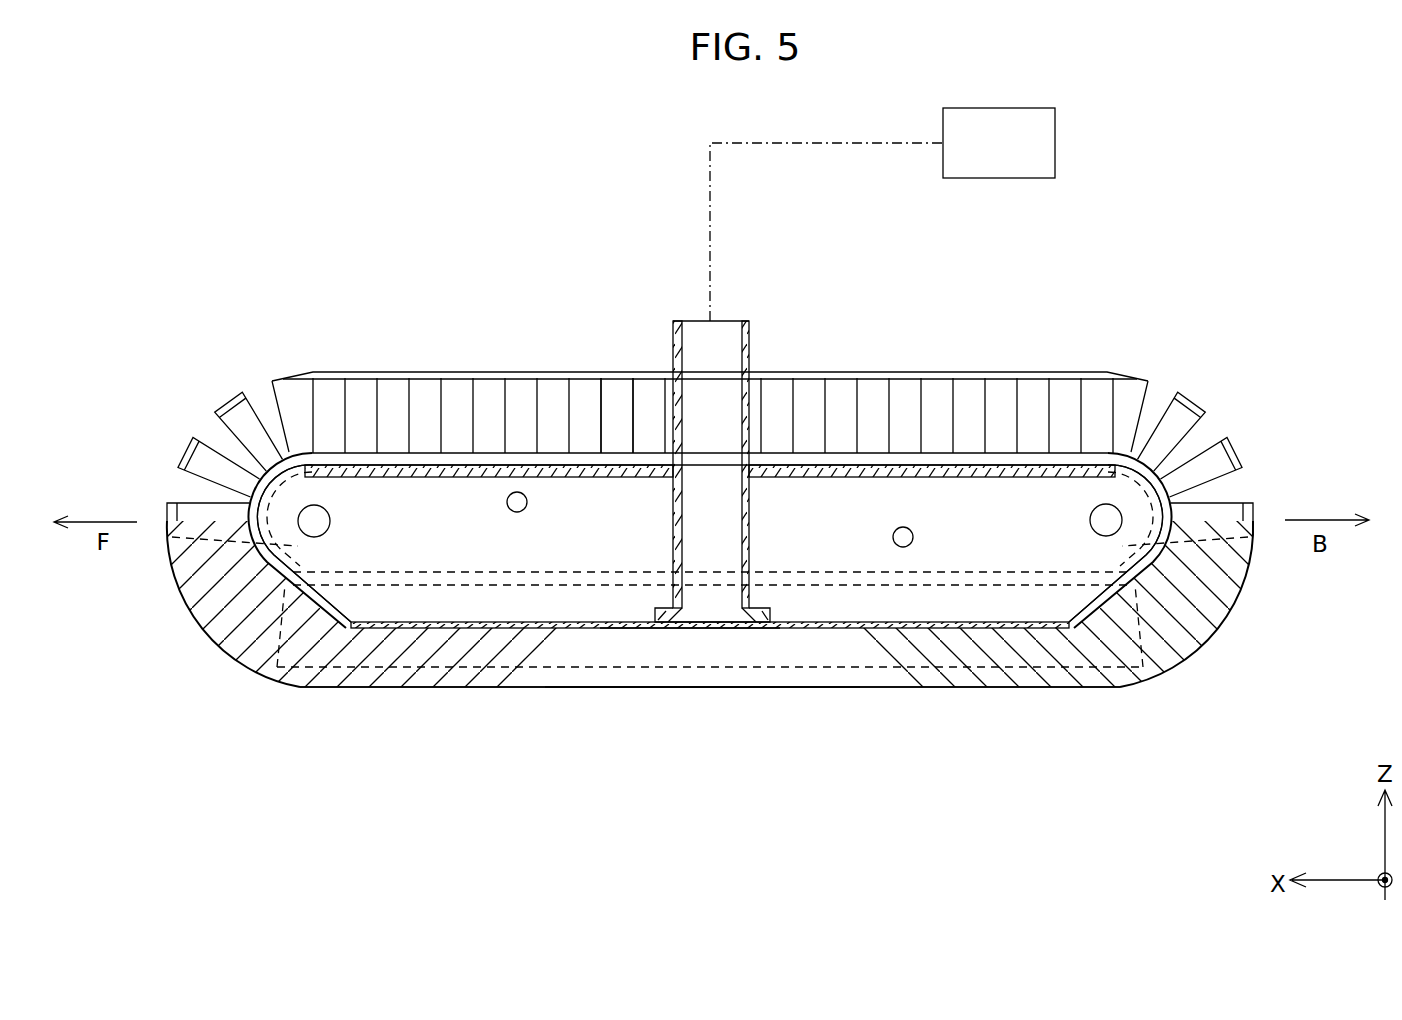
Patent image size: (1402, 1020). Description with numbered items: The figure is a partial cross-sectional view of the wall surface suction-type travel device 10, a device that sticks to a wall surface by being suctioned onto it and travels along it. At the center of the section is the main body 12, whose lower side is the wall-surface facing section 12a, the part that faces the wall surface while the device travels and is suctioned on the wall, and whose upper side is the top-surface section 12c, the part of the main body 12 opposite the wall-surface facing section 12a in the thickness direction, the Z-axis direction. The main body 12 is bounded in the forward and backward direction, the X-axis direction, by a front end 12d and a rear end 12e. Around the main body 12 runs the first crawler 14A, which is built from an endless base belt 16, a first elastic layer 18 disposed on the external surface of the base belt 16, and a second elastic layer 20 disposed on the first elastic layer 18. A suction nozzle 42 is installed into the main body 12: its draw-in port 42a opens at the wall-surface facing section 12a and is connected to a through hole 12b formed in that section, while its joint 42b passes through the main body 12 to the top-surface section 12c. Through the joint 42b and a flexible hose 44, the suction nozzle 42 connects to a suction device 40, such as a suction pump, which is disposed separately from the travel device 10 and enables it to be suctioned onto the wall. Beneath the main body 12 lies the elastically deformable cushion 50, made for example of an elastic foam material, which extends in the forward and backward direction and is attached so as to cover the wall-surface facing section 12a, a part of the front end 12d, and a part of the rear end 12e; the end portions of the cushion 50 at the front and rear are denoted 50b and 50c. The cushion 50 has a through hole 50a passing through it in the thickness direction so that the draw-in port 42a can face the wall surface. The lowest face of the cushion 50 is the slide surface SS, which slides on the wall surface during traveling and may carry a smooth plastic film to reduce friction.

The wall surface suction-type travel device 10 is at (185, 314).
The main body 12 is at (1006, 553).
The wall-surface facing section 12a is at (838, 630).
The through hole 12b is at (682, 630).
The top-surface section 12c is at (820, 480).
The front end 12d is at (272, 568).
The rear end 12e is at (1152, 573).
The first crawler 14A is at (530, 375).
The base belt 16 is at (612, 462).
The first elastic layer 18 is at (630, 425).
The second elastic layer 20 is at (618, 375).
The suction device 40 is at (988, 156).
The suction nozzle 42 is at (677, 556).
The draw-in port 42a is at (712, 613).
The joint 42b is at (750, 335).
The flexible hose 44 is at (708, 175).
The cushion 50 is at (1018, 668).
The through hole 50a is at (610, 661).
The base front end 50b is at (235, 645).
The base rear end 50c is at (1187, 650).
The slide surface SS is at (577, 690).